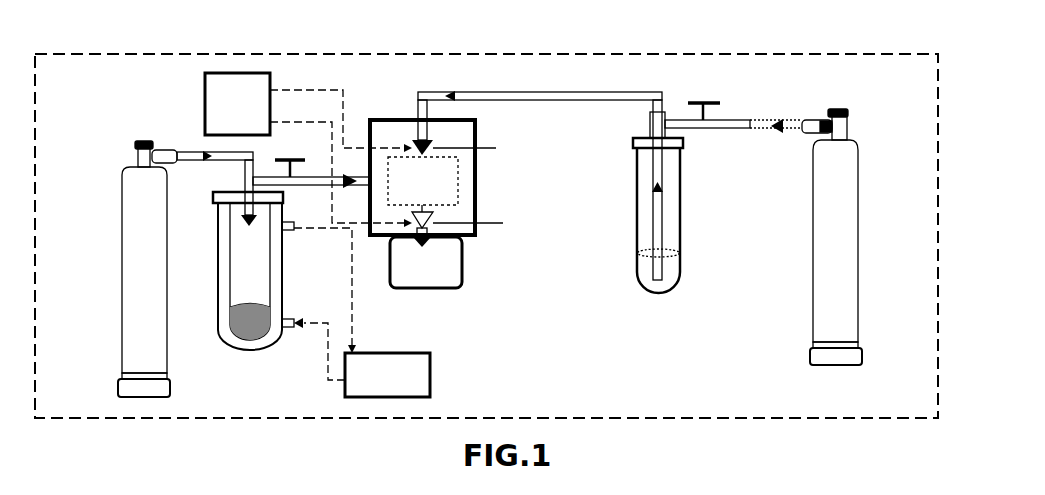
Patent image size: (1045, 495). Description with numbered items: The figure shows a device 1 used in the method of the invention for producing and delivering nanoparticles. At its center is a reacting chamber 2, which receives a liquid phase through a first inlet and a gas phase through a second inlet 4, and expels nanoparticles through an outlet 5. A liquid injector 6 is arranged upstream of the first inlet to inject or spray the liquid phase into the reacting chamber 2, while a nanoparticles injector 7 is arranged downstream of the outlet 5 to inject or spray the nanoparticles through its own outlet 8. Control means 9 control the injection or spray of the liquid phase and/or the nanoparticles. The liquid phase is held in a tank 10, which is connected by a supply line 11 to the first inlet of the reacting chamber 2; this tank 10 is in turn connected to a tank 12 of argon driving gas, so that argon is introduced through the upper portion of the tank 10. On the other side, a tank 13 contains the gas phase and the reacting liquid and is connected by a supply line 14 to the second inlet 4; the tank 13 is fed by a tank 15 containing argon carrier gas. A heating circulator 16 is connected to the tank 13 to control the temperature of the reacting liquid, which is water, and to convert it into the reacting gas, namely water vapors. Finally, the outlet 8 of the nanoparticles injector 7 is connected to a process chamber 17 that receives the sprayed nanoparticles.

The device 1 is at (830, 50).
The reacting chamber 2 is at (423, 181).
The second inlet 4 is at (377, 176).
The outlet 5 is at (434, 209).
The liquid injector 6 is at (459, 127).
The nanoparticles injector 7 is at (474, 223).
The outlet of the nanoparticles injector 8 is at (440, 236).
The control means 9 is at (308, 150).
The tank 10 is at (672, 266).
The supply line 11 is at (540, 93).
The tank 12 is at (826, 306).
The tank 13 is at (262, 340).
The supply line 14 is at (298, 168).
The tank 15 is at (158, 328).
The heating circulator 16 is at (362, 312).
The process chamber 17 is at (426, 262).